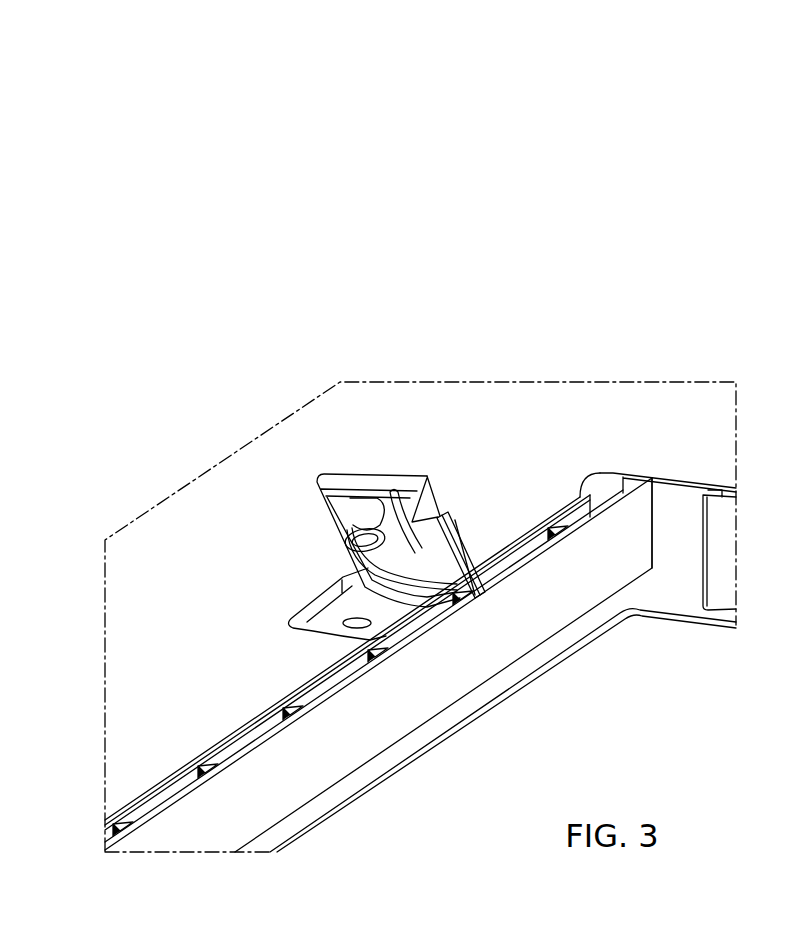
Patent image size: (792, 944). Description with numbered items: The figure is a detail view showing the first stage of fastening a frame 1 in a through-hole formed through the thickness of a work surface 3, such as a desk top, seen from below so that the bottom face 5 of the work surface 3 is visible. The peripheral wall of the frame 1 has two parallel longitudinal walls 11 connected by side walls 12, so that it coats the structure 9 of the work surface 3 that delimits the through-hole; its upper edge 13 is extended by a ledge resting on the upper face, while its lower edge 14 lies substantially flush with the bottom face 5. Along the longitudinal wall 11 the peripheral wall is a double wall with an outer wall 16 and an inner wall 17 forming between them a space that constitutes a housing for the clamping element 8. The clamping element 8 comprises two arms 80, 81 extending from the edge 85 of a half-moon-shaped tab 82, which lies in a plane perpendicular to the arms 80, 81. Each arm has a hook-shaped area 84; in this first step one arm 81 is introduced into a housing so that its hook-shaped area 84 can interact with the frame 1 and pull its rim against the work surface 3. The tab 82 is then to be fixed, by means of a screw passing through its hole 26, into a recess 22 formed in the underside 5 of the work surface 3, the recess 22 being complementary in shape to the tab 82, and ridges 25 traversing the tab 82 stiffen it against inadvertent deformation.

The frame 1 is at (692, 588).
The work surface 3 is at (679, 416).
The bottom face 5 is at (186, 620).
The clamping element 8 is at (406, 526).
The structure 9 is at (530, 532).
The longitudinal wall 11 is at (450, 687).
The side wall 12 is at (698, 498).
The upper edge 13 is at (668, 621).
The lower edge 14 is at (598, 482).
The outer wall 16 is at (150, 792).
The inner wall 17 is at (147, 824).
The recess 22 is at (379, 630).
The ridge 25 is at (357, 577).
The hole 26 is at (356, 547).
The arm 80 is at (447, 508).
The arm 81 is at (483, 592).
The tab 82 is at (322, 516).
The hook-shaped area 84 is at (395, 500).
The edge 85 is at (455, 520).